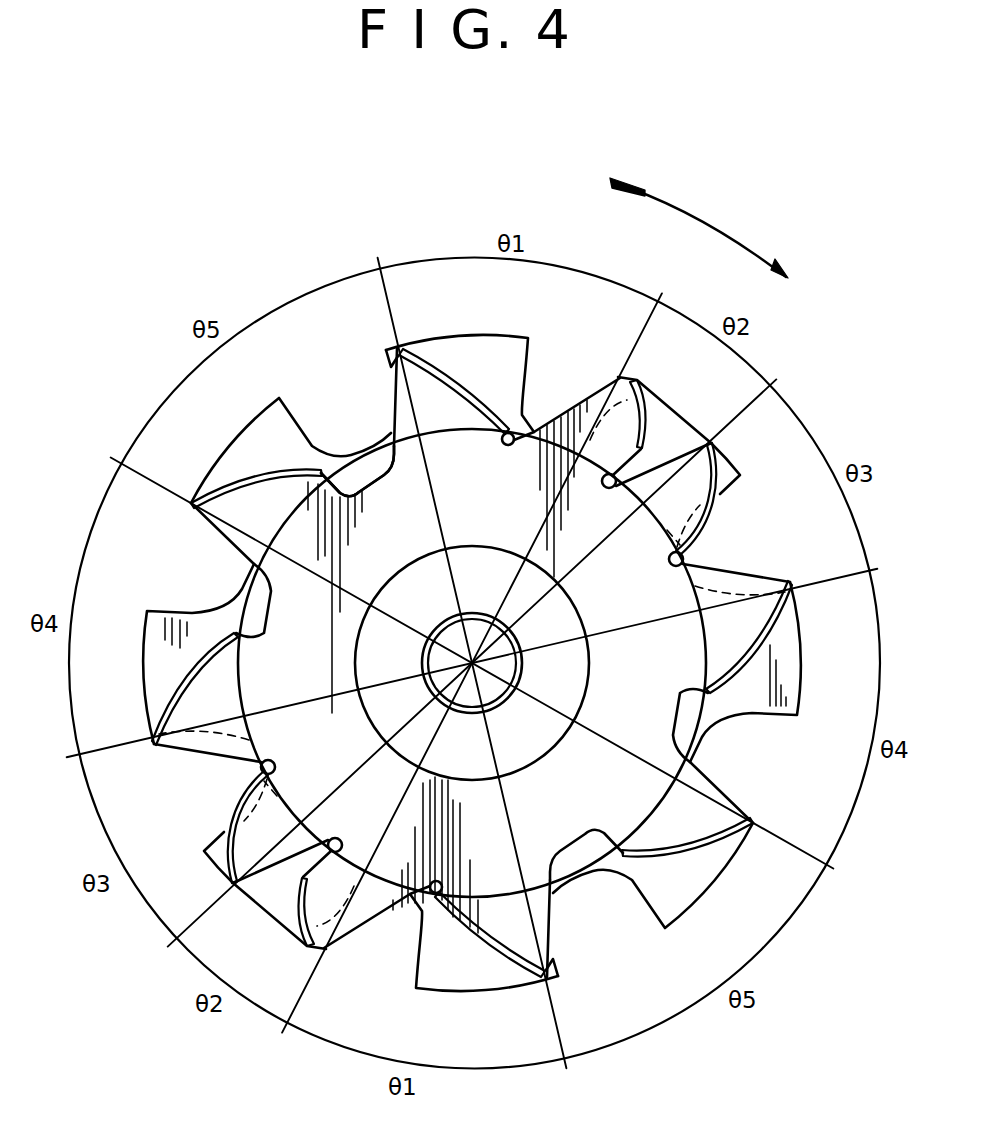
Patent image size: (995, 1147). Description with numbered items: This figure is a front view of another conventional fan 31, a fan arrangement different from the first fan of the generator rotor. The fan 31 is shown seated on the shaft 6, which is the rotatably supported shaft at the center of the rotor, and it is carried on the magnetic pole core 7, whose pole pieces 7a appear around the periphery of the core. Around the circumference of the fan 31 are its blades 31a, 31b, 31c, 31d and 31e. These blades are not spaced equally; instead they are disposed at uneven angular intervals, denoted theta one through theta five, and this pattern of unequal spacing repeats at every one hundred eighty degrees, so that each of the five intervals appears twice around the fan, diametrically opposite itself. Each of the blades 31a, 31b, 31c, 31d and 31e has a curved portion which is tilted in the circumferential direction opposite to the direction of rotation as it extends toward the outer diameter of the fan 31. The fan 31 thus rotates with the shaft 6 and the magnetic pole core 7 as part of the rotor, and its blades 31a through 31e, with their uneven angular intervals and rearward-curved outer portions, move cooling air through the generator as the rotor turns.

The shaft 6 is at (509, 673).
The magnetic pole core 7 is at (499, 338).
The pole pieces 7a is at (475, 683).
The fan 31 is at (352, 462).
The blade 31a is at (447, 358).
The blade 31b is at (645, 396).
The blade 31c is at (718, 506).
The blade 31d is at (196, 628).
The blade 31e is at (225, 482).